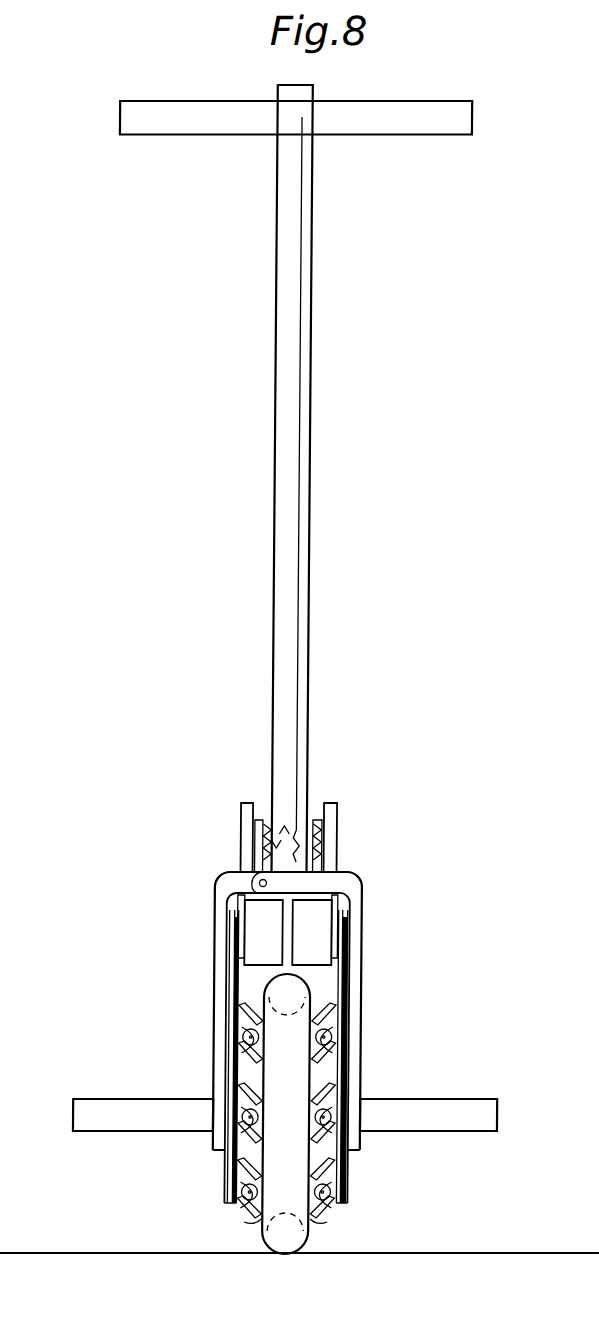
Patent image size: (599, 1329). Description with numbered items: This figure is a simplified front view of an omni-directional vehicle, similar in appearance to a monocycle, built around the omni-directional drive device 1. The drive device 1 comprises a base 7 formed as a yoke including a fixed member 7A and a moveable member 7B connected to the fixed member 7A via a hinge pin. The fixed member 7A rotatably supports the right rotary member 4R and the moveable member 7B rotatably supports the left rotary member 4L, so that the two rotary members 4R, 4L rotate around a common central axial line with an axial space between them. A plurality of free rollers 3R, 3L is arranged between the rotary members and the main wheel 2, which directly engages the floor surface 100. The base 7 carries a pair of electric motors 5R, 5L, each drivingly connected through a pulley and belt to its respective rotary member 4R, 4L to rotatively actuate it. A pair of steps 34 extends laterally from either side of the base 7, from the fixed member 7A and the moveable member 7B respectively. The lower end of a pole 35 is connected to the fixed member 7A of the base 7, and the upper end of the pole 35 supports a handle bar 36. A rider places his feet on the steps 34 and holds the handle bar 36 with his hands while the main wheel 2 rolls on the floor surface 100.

The omni-directional drive device 1 is at (422, 937).
The main wheel 2 is at (308, 1237).
The free roller 3L is at (257, 1216).
The free roller 3R is at (323, 1212).
The left rotary member 4L is at (249, 1137).
The right rotary member 4R is at (336, 1152).
The electric motor 5L is at (280, 919).
The electric motor 5R is at (309, 922).
The base 7 is at (370, 980).
The fixed member 7A is at (361, 1045).
The moveable member 7B is at (230, 1046).
The steps 34 is at (114, 1108).
The pole 35 is at (305, 423).
The handle bar 36 is at (418, 128).
The floor surface 100 is at (457, 1253).